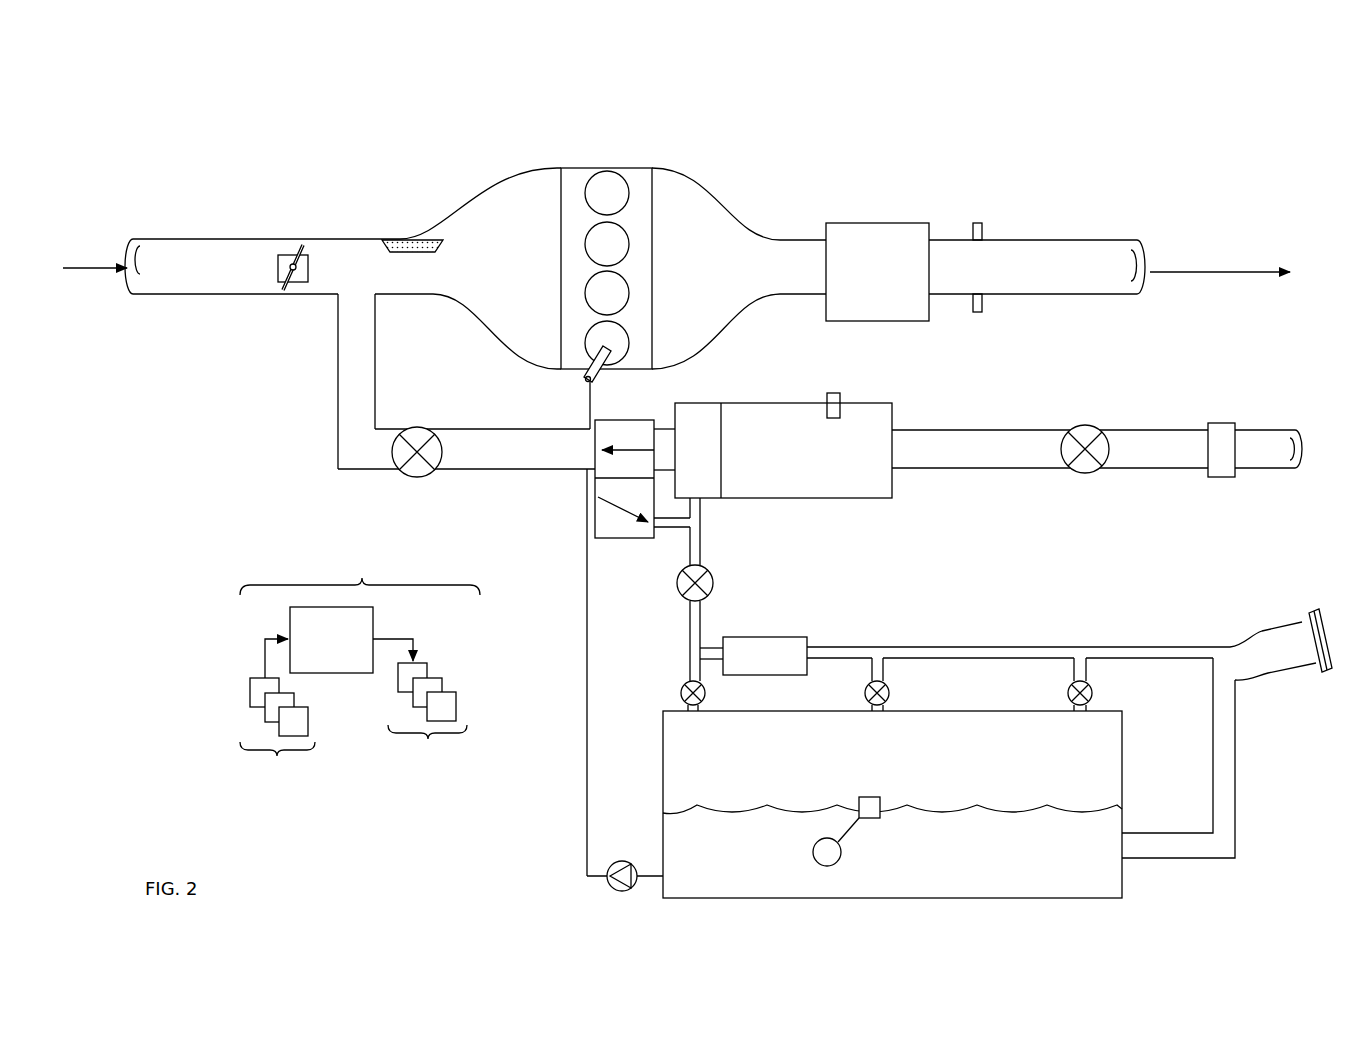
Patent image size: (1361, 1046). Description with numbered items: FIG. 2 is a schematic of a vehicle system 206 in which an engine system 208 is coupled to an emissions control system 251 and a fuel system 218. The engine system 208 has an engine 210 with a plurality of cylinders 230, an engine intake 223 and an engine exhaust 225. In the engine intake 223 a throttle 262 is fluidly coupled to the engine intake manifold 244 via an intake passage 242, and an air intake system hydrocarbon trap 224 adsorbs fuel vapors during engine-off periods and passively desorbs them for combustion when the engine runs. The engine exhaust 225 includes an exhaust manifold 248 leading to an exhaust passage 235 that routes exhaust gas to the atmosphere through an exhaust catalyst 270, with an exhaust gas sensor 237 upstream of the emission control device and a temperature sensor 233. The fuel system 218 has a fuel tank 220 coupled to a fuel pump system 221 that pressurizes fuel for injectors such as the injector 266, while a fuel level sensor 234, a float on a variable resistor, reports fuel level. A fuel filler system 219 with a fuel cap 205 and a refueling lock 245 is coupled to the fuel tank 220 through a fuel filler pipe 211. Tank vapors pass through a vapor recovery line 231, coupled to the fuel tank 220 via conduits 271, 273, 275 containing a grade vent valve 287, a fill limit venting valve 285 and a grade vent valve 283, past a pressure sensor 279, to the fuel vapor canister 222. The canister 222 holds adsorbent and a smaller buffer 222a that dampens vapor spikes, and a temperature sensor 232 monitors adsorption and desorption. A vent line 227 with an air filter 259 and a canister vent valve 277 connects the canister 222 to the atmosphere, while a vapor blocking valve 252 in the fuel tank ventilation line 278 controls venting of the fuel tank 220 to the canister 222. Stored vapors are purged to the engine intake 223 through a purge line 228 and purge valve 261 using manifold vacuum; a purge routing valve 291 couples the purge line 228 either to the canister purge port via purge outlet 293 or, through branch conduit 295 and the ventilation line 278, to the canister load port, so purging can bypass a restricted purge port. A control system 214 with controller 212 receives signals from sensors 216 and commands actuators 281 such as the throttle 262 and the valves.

The vehicle system 206 is at (152, 170).
The engine intake 223 is at (342, 176).
The air intake system hydrocarbon trap 224 is at (415, 242).
The throttle 262 is at (307, 276).
The intake passage 242 is at (333, 296).
The engine intake manifold 244 is at (480, 268).
The engine 210 is at (653, 250).
The cylinders 230 is at (627, 182).
The exhaust manifold 248 is at (739, 268).
The engine exhaust 225 is at (833, 156).
The engine system 208 is at (944, 170).
The exhaust catalyst 270 is at (862, 224).
The exhaust passage 235 is at (1090, 240).
The exhaust gas sensor 237 is at (973, 234).
The temperature sensor 233 is at (973, 305).
The emissions control system 251 is at (1282, 390).
The injector 266 is at (587, 379).
The purge line 228 is at (466, 629).
The canister purge valve 261 is at (417, 427).
The purge routing valve 291 is at (642, 420).
The purge outlet 293 is at (657, 429).
The fuel vapor canister 222 is at (893, 425).
The buffer 222a is at (690, 403).
The canister temperature sensor 232 is at (831, 393).
The vent line 227 is at (1097, 449).
The canister vent valve 277 is at (1088, 425).
The air filter 259 is at (1228, 423).
The branch conduit 295 is at (687, 530).
The fuel tank ventilation line 278 is at (700, 528).
The vapor blocking valve 252 is at (686, 598).
The conduit 271 is at (701, 683).
The grade vent valve 287 is at (681, 693).
The pressure sensor 279 is at (807, 640).
The vapor recovery line 231 is at (1140, 647).
The conduit 273 is at (860, 684).
The fill limit venting valve 285 is at (889, 693).
The conduit 275 is at (1063, 684).
The grade vent valve 283 is at (1092, 693).
The fuel filler pipe 211 is at (1237, 752).
The fuel filler system 219 is at (1284, 608).
The fuel cap 205 is at (1314, 610).
The refueling lock 245 is at (1314, 670).
The fuel tank 220 is at (1122, 806).
The fuel level sensor 234 is at (875, 797).
The fuel pump system 221 is at (620, 862).
The fuel system 218 is at (1252, 825).
The control system 214 is at (360, 666).
The controller 212 is at (331, 640).
The sensors 216 is at (277, 717).
The actuators 281 is at (422, 708).